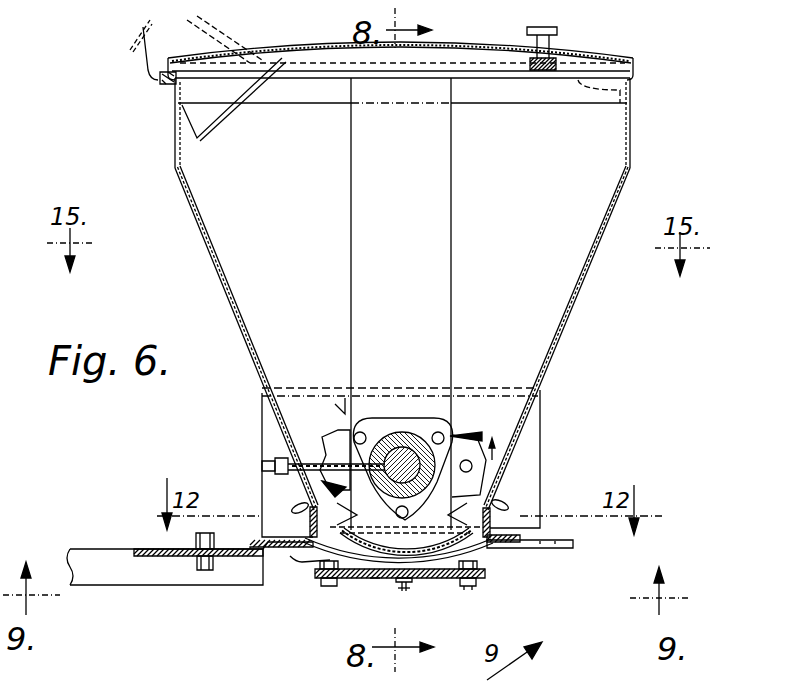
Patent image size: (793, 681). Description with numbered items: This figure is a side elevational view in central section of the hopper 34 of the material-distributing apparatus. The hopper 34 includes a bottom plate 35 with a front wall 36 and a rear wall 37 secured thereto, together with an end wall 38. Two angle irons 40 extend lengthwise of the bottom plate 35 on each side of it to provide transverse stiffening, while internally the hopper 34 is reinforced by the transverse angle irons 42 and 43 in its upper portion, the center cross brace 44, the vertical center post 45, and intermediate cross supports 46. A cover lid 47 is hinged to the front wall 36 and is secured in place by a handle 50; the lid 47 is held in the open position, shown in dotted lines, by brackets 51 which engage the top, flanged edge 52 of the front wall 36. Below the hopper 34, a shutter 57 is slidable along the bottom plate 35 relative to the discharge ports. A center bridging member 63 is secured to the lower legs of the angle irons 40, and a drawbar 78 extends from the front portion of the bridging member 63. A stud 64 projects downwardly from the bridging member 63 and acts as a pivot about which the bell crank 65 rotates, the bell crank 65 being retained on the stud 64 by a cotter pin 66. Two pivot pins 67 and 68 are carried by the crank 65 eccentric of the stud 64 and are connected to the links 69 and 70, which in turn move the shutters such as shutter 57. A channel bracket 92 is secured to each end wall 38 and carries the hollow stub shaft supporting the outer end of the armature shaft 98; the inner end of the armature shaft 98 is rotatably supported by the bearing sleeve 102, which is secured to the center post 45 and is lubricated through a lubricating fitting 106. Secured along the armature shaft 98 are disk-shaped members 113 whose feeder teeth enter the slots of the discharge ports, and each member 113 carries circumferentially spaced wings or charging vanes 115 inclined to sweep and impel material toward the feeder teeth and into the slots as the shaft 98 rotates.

The hopper 34 is at (556, 320).
The bottom plate 35 is at (500, 546).
The front wall 36 is at (212, 264).
The rear wall 37 is at (592, 274).
The end wall 38 is at (524, 226).
The angle irons 40 is at (308, 514).
The transverse angle iron 42 is at (180, 130).
The transverse angle iron 43 is at (626, 120).
The center cross brace 44 is at (487, 95).
The vertical center post 45 is at (452, 280).
The intermediate cross supports 46 is at (430, 62).
The cover lid 47 is at (158, 78).
The handle 50 is at (556, 31).
The brackets 51 is at (226, 40).
The top flanged edge 52 is at (172, 72).
The shutter 57 is at (348, 580).
The center bridging member 63 is at (290, 548).
The stud 64 is at (408, 586).
The bell crank 65 is at (375, 580).
The cotter pin 66 is at (398, 583).
The pivot pin 67 is at (468, 588).
The pivot pin 68 is at (326, 586).
The link 69 is at (478, 566).
The link 70 is at (300, 562).
The drawbar 78 is at (104, 556).
The channel bracket 92 is at (270, 442).
The armature shaft 98 is at (418, 432).
The bearing sleeve 102 is at (398, 432).
The lubricating fitting 106 is at (270, 470).
The disk-shaped members 113 is at (462, 422).
The wings or charging vanes 115 is at (340, 410).